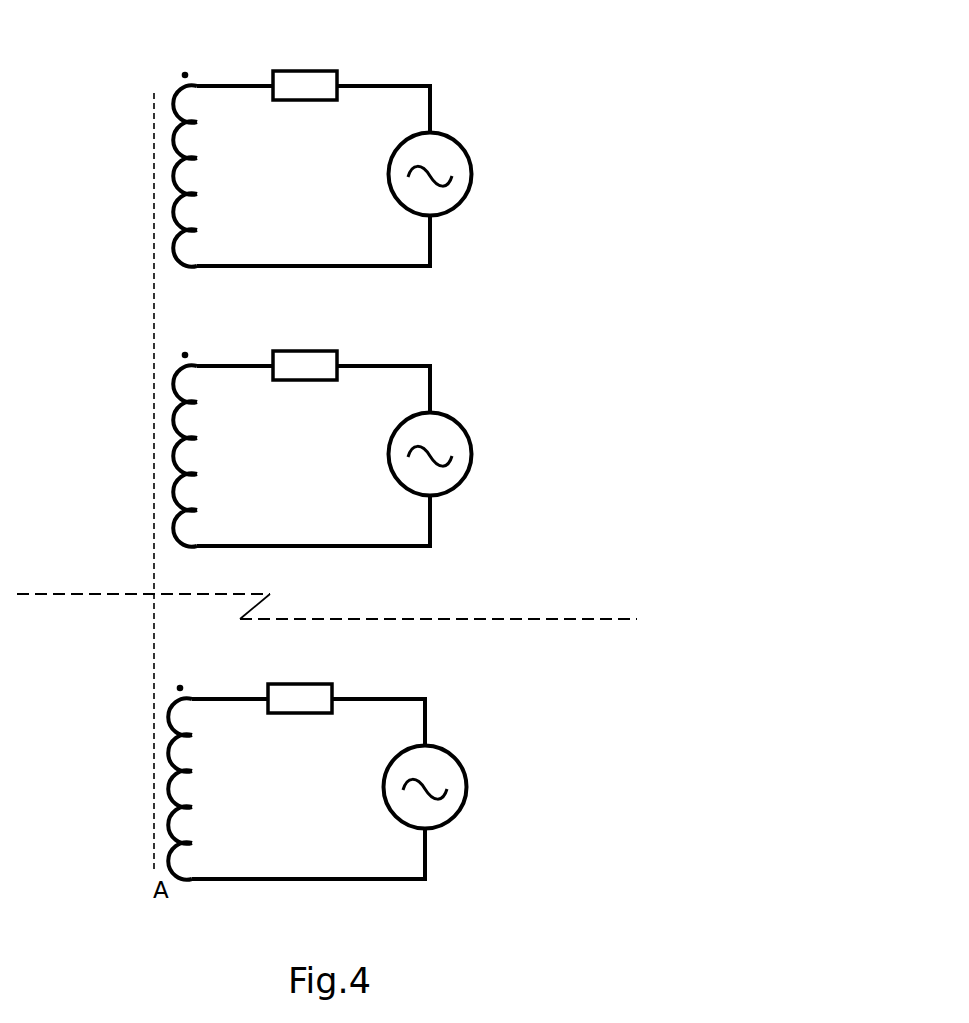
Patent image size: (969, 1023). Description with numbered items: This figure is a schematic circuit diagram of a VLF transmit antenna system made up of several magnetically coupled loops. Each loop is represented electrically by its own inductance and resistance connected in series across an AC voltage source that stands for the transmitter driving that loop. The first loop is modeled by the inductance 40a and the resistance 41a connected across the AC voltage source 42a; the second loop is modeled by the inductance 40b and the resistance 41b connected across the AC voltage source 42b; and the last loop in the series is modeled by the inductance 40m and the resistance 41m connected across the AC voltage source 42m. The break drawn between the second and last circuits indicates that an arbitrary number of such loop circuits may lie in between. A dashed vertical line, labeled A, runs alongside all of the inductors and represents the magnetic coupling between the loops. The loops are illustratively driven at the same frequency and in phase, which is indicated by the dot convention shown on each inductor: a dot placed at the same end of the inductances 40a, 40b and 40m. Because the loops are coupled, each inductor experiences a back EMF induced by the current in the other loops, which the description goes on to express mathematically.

The inductance 40a is at (165, 193).
The resistance 41a is at (296, 71).
The AC voltage source 42a is at (462, 142).
The inductance 40b is at (152, 449).
The resistance 41b is at (342, 360).
The AC voltage source 42b is at (475, 415).
The inductance 40m is at (148, 782).
The resistance 41m is at (336, 701).
The AC voltage source 42m is at (468, 749).